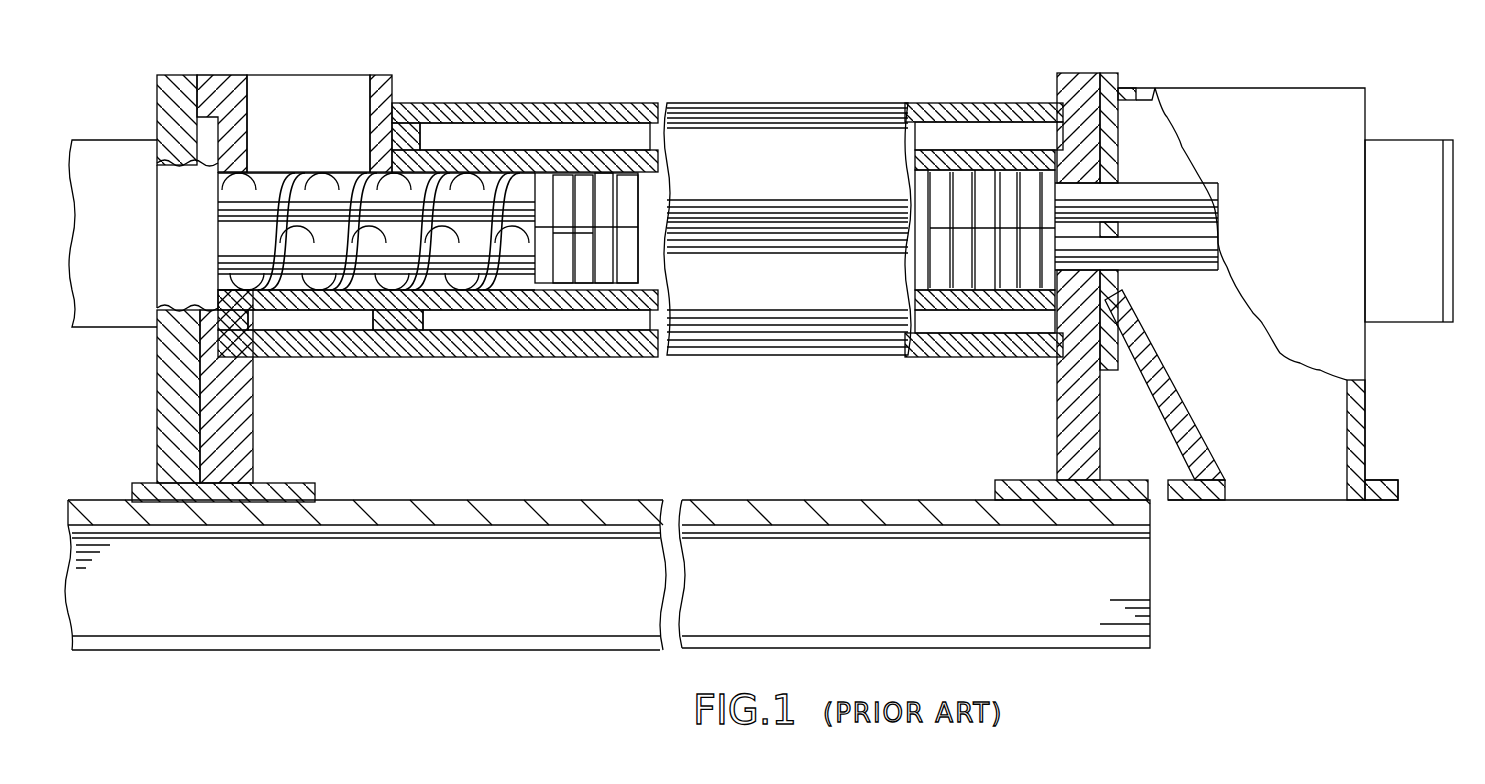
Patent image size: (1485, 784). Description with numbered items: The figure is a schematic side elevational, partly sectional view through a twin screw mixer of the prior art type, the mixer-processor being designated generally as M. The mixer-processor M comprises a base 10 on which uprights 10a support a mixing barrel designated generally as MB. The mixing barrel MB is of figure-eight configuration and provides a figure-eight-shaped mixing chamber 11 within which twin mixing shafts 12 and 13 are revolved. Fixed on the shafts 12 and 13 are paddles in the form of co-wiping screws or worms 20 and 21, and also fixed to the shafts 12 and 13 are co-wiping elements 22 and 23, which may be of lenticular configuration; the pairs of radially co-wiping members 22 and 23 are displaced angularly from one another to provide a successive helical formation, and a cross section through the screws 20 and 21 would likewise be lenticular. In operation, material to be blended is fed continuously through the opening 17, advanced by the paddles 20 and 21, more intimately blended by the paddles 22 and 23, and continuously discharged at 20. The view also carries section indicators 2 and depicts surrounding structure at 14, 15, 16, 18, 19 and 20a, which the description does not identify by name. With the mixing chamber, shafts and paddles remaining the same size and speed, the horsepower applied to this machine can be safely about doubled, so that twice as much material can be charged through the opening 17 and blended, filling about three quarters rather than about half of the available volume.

The base 10 is at (432, 505).
The uprights 10a is at (245, 440).
The mixing chamber 11 is at (583, 177).
The mixing shaft 12 is at (1145, 196).
The mixing shaft 13 is at (1168, 270).
The housing 14 is at (503, 128).
The end member 15 is at (126, 304).
The end bracket 16 is at (204, 260).
The opening 17 is at (322, 145).
The retainer plate 18 is at (387, 88).
The load member 19 is at (1307, 199).
The co-wiping screw 20 is at (468, 180).
The brace 20a is at (1295, 483).
The co-wiping screw 21 is at (1417, 250).
The co-wiping element 22 is at (588, 207).
The co-wiping element 23 is at (585, 278).
The section line 2 is at (570, 138).
The mixer-processor M is at (692, 91).
The mixing barrel MB is at (445, 368).